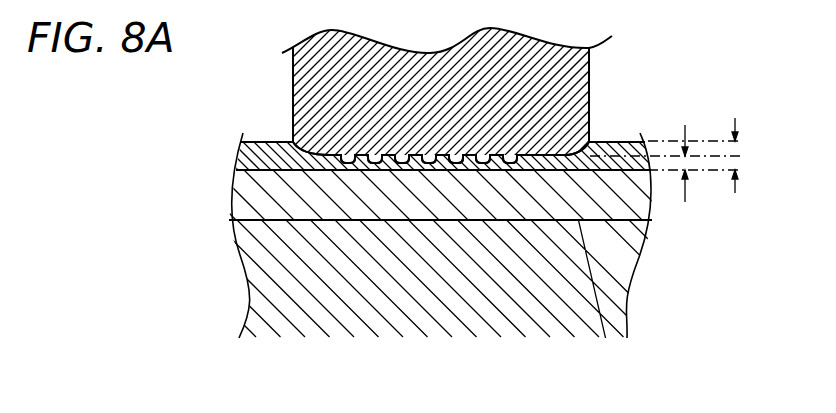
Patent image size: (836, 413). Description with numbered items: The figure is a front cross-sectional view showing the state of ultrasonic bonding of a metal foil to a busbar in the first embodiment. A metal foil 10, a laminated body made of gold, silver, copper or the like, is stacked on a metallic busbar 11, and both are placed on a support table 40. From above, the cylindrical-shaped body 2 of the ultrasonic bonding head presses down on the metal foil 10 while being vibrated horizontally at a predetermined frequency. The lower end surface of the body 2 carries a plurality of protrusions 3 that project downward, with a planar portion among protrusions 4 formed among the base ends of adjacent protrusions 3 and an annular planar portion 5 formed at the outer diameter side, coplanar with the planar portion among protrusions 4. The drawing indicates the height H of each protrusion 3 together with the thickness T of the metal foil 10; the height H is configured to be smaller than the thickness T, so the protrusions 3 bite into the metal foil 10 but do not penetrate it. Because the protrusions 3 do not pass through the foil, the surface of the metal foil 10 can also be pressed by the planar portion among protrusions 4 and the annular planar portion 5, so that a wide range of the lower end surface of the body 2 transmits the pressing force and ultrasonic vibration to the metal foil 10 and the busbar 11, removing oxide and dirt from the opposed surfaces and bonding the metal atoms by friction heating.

The body 2 is at (577, 73).
The protrusions 3 is at (528, 160).
The planar portion among protrusions 4 is at (455, 162).
The annular planar portion 5 is at (345, 157).
The metal foil 10 is at (247, 163).
The busbar 11 is at (248, 196).
The support table 40 is at (256, 278).
The height of the protrusion H is at (687, 160).
The thickness of the metal foil T is at (737, 157).